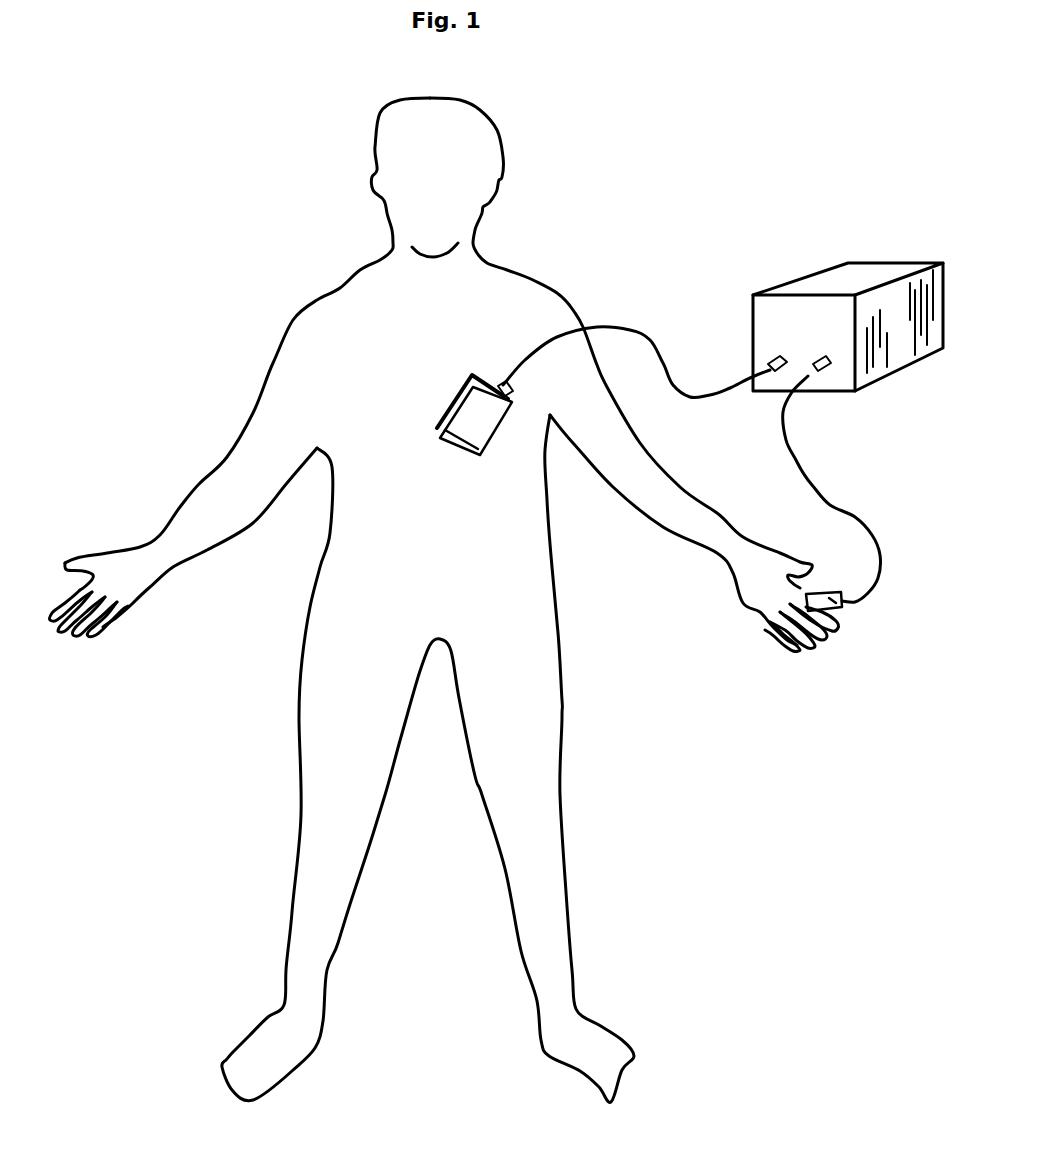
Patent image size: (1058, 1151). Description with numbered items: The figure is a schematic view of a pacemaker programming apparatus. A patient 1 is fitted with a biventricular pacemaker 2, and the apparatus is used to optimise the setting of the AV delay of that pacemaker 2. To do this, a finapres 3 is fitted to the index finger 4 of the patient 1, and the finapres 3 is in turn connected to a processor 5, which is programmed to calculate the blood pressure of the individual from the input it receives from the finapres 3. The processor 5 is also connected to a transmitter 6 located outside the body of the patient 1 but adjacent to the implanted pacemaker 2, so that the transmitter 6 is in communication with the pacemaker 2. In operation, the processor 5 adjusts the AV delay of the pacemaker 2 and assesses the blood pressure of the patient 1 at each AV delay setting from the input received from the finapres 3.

The patient 1 is at (315, 300).
The biventricular pacemaker 2 is at (462, 388).
The finapres 3 is at (845, 608).
The index finger 4 is at (812, 583).
The processor 5 is at (778, 315).
The transmitter 6 is at (478, 425).